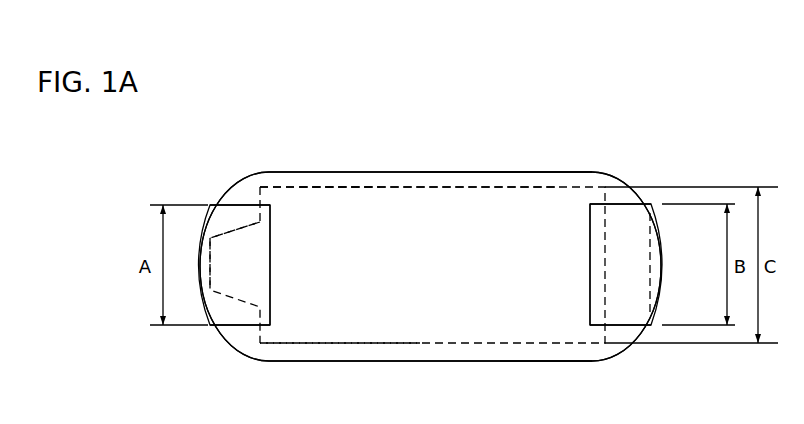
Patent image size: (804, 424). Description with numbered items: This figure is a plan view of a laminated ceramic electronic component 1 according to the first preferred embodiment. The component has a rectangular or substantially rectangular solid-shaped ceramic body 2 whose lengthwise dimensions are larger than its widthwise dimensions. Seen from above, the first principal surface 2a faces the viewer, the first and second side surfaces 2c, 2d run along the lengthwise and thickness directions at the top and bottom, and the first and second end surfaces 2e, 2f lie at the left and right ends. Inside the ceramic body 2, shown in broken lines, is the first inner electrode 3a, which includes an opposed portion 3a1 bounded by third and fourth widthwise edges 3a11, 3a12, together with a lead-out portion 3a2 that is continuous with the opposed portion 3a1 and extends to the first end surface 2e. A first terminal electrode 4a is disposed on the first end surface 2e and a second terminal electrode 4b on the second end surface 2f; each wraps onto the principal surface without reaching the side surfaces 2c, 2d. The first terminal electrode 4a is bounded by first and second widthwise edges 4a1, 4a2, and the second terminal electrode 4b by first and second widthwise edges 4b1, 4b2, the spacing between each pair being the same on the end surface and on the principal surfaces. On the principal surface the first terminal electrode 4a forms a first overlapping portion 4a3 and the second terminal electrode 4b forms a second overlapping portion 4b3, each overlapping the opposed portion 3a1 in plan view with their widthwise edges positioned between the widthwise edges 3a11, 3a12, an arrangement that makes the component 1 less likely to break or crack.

The laminated ceramic electronic component 1 is at (211, 151).
The ceramic body 2 is at (365, 171).
The first principal surface 2a is at (534, 176).
The first side surface 2c is at (583, 362).
The second side surface 2d is at (477, 172).
The first end surface 2e is at (208, 252).
The second end surface 2f is at (653, 266).
The first inner electrode 3a is at (433, 186).
The opposed portion 3a1 is at (383, 225).
The third widthwise edge 3a11 is at (317, 187).
The fourth widthwise edge 3a12 is at (327, 343).
The lead-out portion 3a2 is at (239, 237).
The first terminal electrode 4a is at (212, 328).
The first widthwise edge 4a1 is at (247, 325).
The second widthwise edge 4a2 is at (265, 192).
The first overlapping portion 4a3 is at (262, 272).
The second terminal electrode 4b is at (666, 285).
The first widthwise edge 4b1 is at (628, 323).
The second widthwise edge 4b2 is at (628, 207).
The second overlapping portion 4b3 is at (596, 265).